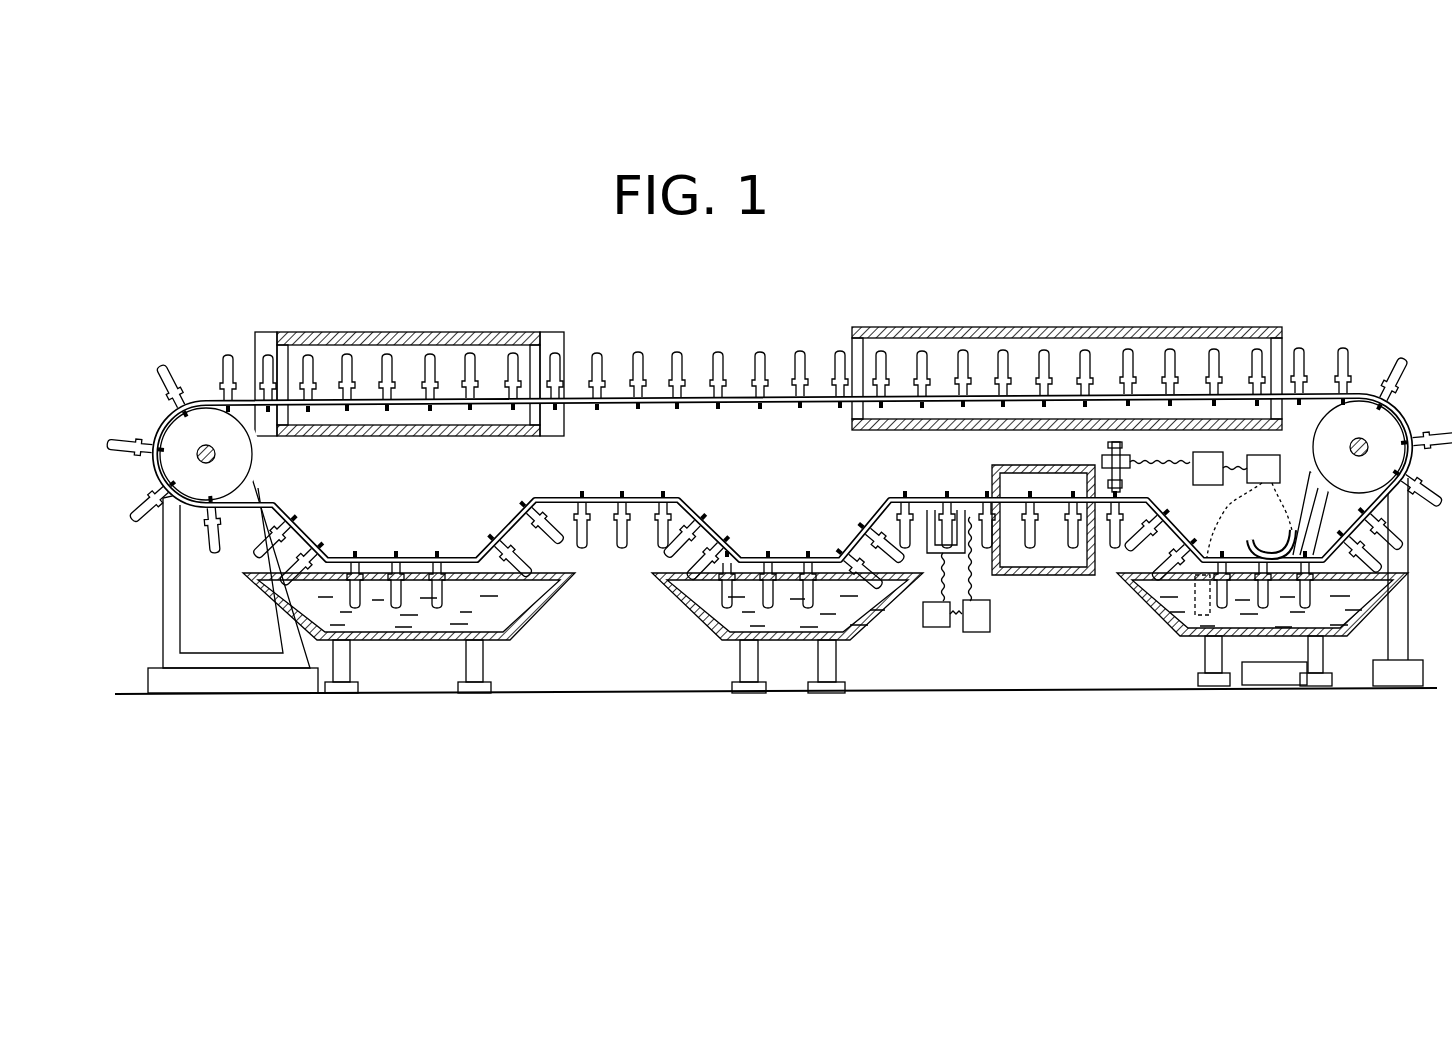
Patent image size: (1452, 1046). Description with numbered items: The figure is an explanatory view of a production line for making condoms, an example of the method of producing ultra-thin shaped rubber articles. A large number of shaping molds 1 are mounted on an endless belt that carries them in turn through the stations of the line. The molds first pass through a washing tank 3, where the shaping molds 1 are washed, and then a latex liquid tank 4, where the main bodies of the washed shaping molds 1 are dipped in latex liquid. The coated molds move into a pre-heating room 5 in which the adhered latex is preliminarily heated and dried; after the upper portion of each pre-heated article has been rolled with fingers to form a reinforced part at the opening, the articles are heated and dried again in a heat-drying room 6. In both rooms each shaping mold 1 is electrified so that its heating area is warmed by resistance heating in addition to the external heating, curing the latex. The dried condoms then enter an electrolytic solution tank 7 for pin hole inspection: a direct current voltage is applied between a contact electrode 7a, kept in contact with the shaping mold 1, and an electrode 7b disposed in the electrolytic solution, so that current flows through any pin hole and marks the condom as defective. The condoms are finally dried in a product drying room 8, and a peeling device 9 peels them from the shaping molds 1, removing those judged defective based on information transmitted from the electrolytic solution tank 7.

The shaping mold 1 is at (634, 534).
The washing tank 3 is at (879, 613).
The latex liquid tank 4 is at (531, 614).
The pre-heating room 5 is at (421, 333).
The heat-drying room 6 is at (956, 327).
The electrolytic solution tank 7 is at (1356, 632).
The contact electrode 7a is at (1250, 562).
The electrode 7b is at (1186, 584).
The product drying room 8 is at (1072, 578).
The peeling device 9 is at (928, 521).